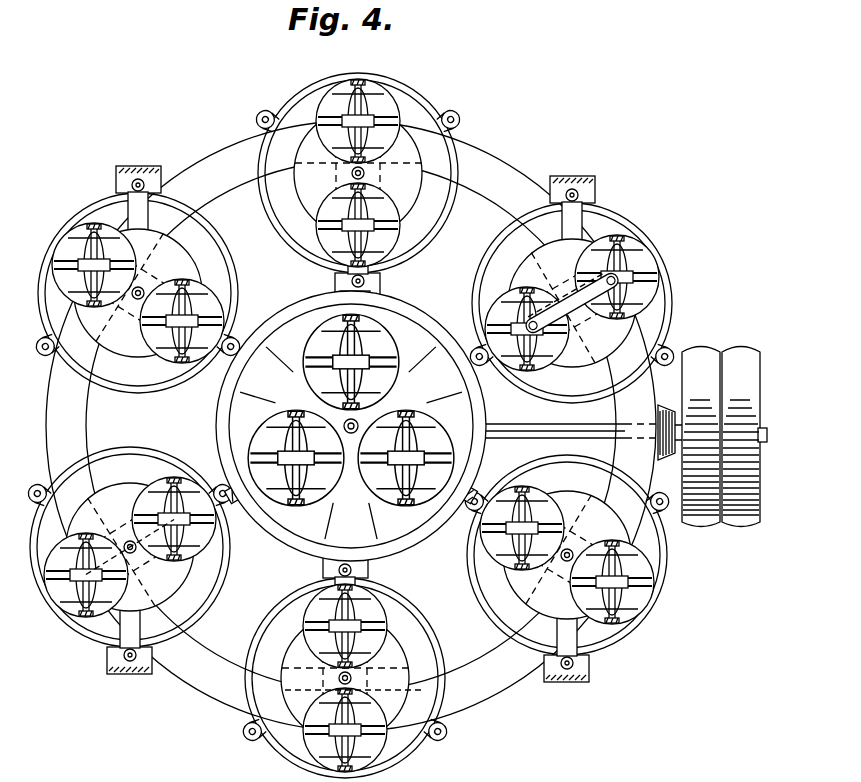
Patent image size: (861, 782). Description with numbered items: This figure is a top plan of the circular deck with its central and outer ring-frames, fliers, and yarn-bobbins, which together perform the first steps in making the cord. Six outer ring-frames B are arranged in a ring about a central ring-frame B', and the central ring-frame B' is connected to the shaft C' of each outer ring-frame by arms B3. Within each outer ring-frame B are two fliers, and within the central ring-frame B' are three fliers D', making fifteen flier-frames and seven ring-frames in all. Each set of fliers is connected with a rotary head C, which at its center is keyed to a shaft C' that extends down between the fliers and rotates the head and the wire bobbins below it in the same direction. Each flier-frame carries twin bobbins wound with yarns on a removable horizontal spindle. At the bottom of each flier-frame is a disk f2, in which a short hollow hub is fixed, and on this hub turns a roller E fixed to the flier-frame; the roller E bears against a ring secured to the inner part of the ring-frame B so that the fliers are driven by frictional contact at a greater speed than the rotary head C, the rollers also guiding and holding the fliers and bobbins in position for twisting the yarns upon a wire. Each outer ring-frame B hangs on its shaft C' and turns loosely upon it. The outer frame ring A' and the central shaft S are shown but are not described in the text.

The annular frame ring A' is at (351, 425).
The ring-frame B is at (349, 425).
The central ring-frame B' is at (369, 426).
The arms B3 is at (246, 316).
The rotary head C is at (351, 425).
The shaft C' is at (351, 425).
The fliers D' is at (348, 424).
The roller E is at (212, 303).
The central shaft S is at (360, 421).
The disk f2 is at (588, 238).